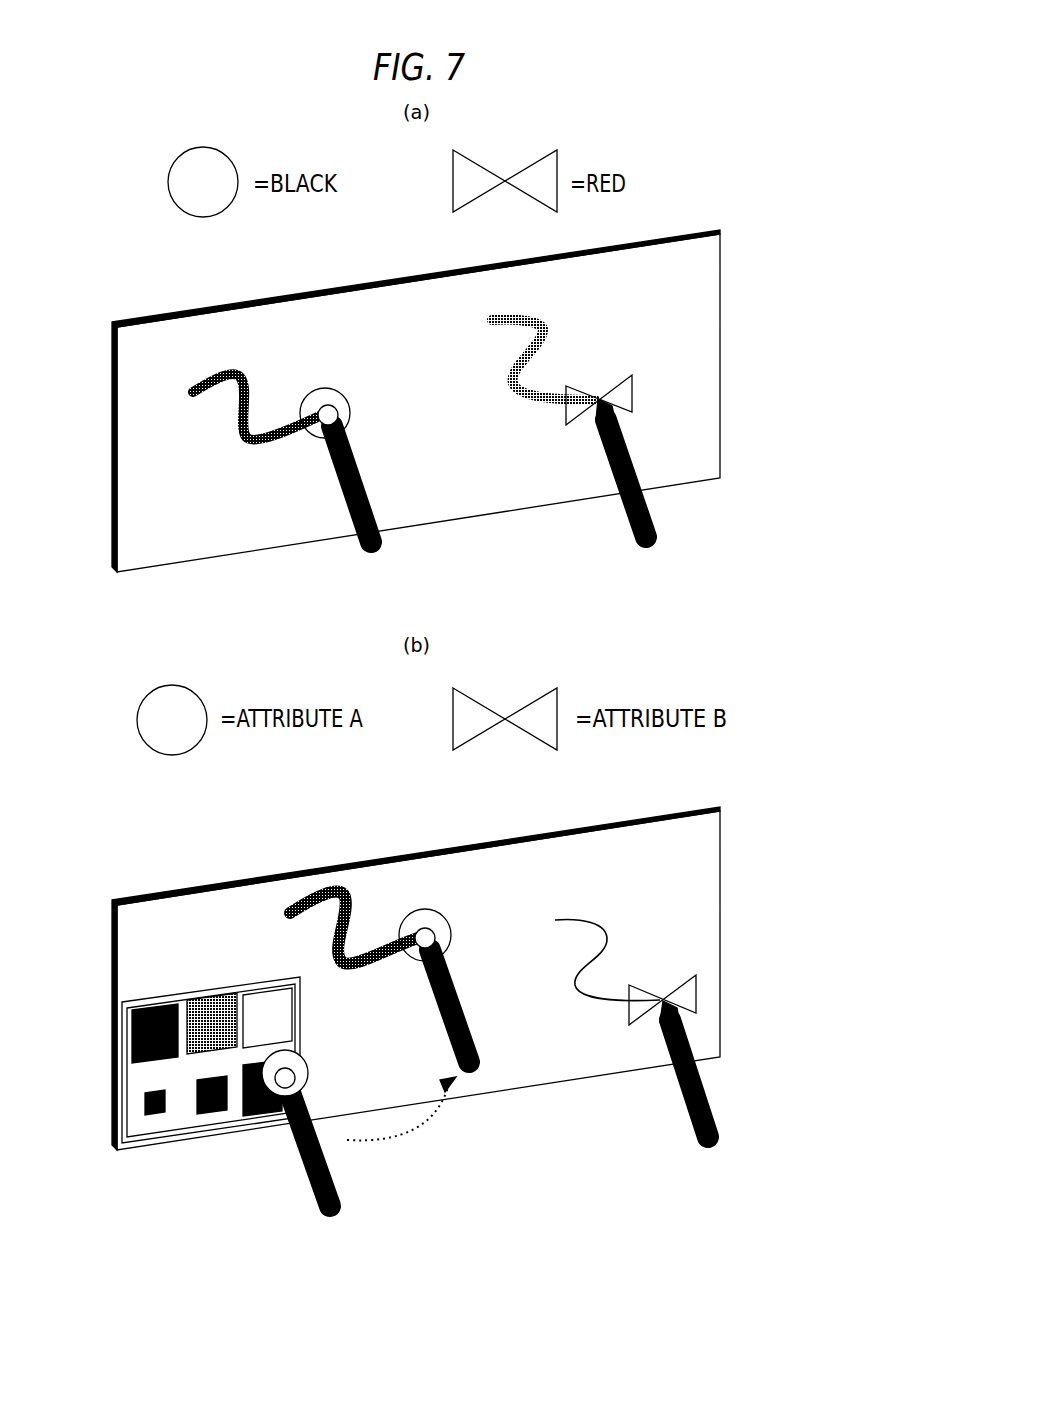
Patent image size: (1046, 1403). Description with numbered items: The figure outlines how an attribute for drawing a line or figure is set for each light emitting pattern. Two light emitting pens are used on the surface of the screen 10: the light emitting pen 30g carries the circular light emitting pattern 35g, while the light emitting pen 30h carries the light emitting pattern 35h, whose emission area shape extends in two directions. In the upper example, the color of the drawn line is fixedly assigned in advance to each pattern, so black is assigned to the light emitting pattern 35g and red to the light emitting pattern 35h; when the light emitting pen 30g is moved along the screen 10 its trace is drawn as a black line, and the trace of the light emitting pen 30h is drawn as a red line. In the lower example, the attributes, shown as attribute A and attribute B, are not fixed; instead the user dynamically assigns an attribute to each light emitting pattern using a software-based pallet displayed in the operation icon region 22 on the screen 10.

The screen 10 is at (718, 228).
The operation icon region 22 is at (179, 1146).
The light emitting pen 30g is at (378, 486).
The light emitting pen 30h is at (663, 507).
The light emitting pattern 35g is at (168, 180).
The light emitting pattern 35h is at (452, 180).